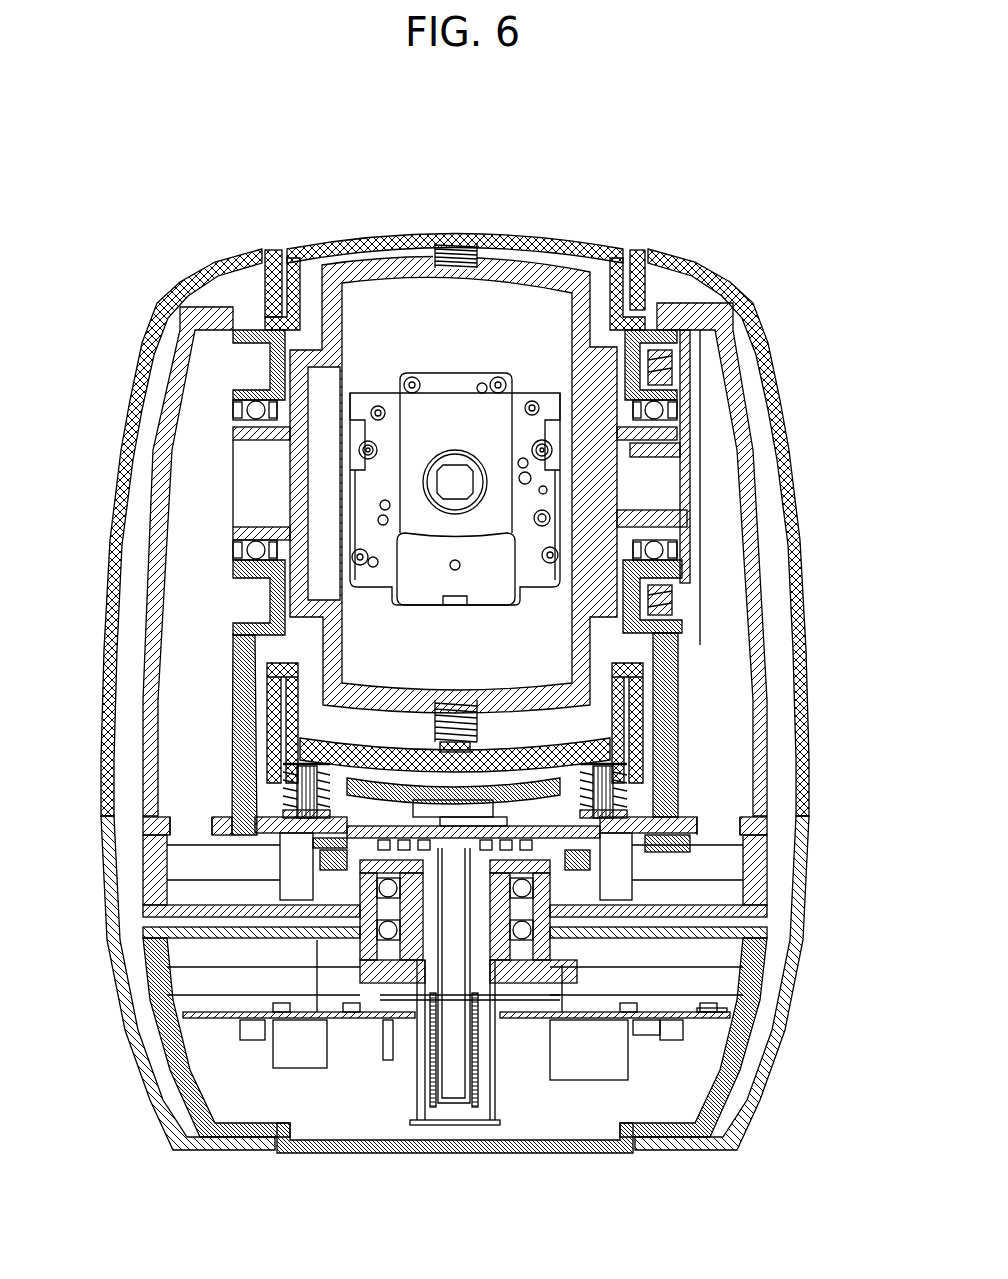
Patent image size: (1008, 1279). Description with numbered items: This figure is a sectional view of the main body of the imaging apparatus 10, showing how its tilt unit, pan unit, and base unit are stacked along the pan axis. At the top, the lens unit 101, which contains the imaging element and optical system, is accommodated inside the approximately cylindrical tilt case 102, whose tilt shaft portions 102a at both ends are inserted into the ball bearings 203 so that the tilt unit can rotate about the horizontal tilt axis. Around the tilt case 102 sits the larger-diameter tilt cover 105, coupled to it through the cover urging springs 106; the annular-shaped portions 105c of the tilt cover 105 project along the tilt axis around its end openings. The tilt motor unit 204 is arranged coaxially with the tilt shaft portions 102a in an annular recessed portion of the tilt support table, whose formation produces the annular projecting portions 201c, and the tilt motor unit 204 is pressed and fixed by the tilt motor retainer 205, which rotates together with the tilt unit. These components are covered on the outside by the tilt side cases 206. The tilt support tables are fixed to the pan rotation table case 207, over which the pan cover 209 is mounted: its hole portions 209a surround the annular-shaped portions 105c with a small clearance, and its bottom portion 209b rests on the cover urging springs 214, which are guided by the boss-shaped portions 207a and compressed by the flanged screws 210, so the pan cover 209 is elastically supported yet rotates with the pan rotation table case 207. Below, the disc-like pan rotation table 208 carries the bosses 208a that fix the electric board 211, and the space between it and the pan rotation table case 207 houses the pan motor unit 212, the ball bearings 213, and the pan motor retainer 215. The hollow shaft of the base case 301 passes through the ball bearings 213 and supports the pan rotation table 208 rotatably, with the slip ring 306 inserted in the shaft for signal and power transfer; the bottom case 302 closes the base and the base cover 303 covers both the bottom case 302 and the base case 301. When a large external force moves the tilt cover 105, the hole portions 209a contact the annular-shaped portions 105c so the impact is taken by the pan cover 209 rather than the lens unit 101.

The imaging apparatus 10 is at (222, 184).
The lens unit 101 is at (445, 405).
The tilt case 102 is at (395, 272).
The tilt shaft portions 102a is at (233, 432).
The tilt cover 105 is at (510, 237).
The annular-shaped portions 105c is at (616, 330).
The cover urging springs 106 is at (470, 243).
The annular projecting portions 201c is at (262, 330).
The ball bearings 203 is at (255, 405).
The tilt motor unit 204 is at (668, 370).
The tilt motor retainer 205 is at (700, 382).
The tilt side cases 206 is at (760, 470).
The pan rotation table case 207 is at (210, 843).
The boss-shaped portions 207a is at (618, 790).
The pan rotation table 208 is at (760, 903).
The bosses 208a is at (293, 863).
The pan cover 209 is at (757, 307).
The hole portions 209a is at (637, 305).
The bottom portion 209b is at (493, 1043).
The flanged screws 210 is at (255, 728).
The electric board 211 is at (622, 830).
The pan motor unit 212 is at (530, 935).
The ball bearings 213 is at (340, 940).
The cover urging springs 214 is at (625, 775).
The pan motor retainer 215 is at (258, 812).
The base case 301 is at (150, 950).
The bottom case 302 is at (620, 1153).
The base cover 303 is at (712, 1140).
The slip ring 306 is at (430, 1045).